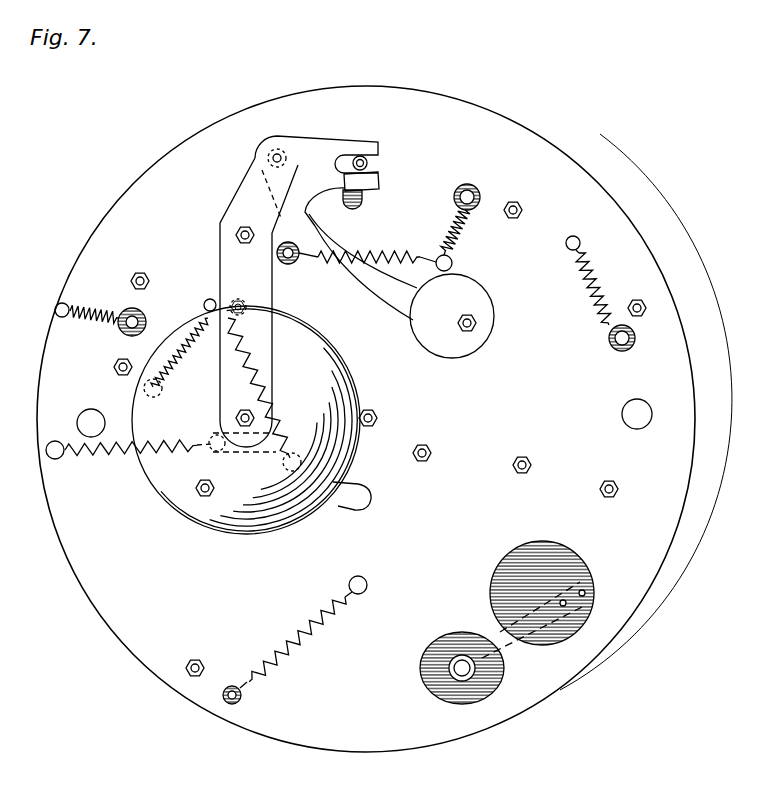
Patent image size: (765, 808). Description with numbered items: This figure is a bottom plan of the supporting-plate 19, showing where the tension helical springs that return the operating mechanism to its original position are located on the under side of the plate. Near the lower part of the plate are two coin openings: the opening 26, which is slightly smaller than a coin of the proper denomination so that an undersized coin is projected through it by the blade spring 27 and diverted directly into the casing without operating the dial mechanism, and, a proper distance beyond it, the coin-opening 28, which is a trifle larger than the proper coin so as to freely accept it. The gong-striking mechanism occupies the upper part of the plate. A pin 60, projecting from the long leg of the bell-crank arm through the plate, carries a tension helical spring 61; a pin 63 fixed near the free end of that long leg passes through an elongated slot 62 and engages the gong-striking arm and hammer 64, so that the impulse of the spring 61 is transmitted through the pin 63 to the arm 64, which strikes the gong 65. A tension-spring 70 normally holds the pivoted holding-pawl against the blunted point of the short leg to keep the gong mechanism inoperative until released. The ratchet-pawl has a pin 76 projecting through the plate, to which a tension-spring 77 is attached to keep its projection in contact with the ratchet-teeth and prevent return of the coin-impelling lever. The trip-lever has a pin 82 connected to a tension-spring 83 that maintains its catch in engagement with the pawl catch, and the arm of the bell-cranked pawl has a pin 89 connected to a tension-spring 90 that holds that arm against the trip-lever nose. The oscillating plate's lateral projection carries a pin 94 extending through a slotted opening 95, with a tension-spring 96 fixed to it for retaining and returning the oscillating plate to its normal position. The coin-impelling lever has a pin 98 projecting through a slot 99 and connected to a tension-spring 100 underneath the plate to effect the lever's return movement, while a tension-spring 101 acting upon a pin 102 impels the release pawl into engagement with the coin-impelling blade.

The supporting-plate 19 is at (516, 138).
The opening 26 is at (437, 680).
The blade spring 27 is at (510, 648).
The coin-opening 28 is at (580, 564).
The pin 60 is at (478, 190).
The tension helical spring 61 is at (466, 237).
The elongated slot 62 is at (365, 200).
The pin 63 is at (368, 162).
The gong-striking arm and hammer 64 is at (318, 158).
The gong 65 is at (349, 353).
The tension-spring 70 is at (592, 281).
The pin 76 is at (290, 264).
The tension-spring 77 is at (401, 252).
The pin 82 is at (142, 387).
The tension-spring 83 is at (165, 361).
The pin 89 is at (142, 315).
The tension-spring 90 is at (88, 305).
The pin 94 is at (290, 470).
The slotted opening 95 is at (352, 506).
The tension-spring 96 is at (252, 358).
The pin 98 is at (210, 448).
The slot 99 is at (262, 448).
The tension-spring 100 is at (113, 456).
The tension-spring 101 is at (308, 642).
The pin 102 is at (230, 705).